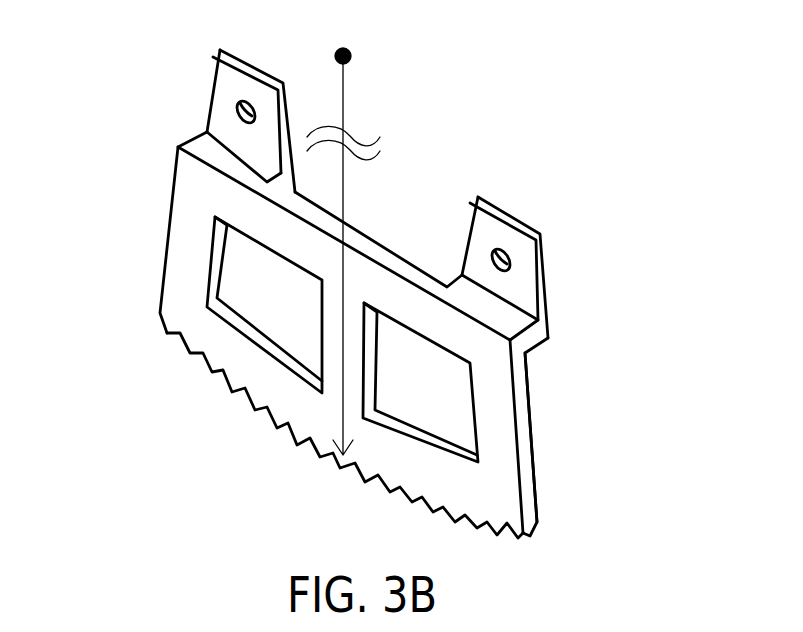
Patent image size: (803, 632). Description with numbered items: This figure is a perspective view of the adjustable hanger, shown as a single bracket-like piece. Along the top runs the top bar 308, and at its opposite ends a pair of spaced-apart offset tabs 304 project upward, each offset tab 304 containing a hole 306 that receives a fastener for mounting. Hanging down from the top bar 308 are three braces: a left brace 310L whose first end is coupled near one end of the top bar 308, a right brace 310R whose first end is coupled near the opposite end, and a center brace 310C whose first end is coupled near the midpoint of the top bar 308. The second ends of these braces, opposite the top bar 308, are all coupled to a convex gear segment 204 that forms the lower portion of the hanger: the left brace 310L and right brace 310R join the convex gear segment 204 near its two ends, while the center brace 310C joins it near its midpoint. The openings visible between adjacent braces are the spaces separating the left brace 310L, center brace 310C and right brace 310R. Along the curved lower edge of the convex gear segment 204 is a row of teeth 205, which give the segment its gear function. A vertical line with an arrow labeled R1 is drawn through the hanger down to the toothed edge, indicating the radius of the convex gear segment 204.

The convex gear segment 204 is at (500, 485).
The teeth 205 is at (407, 492).
The offset tab 304 is at (211, 70).
The hole 306 is at (238, 112).
The top bar 308 is at (382, 278).
The left brace 310L is at (185, 273).
The center brace 310C is at (370, 363).
The right brace 310R is at (523, 418).
The radius R1 is at (343, 251).